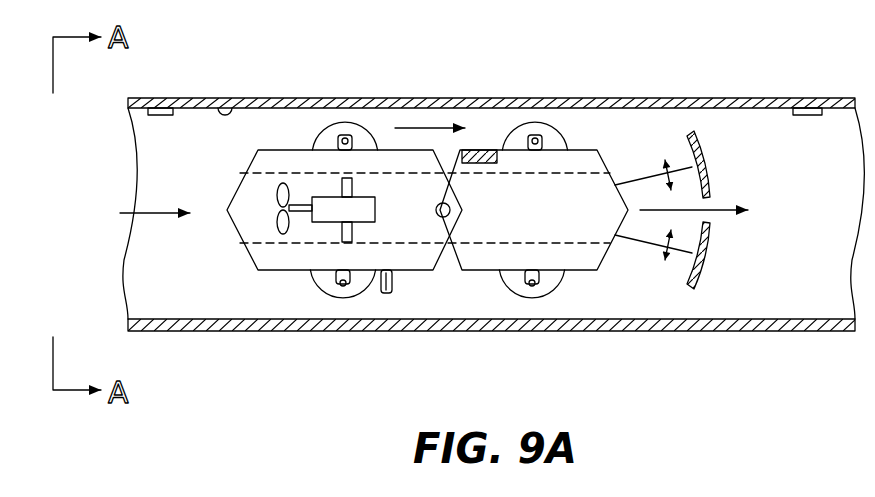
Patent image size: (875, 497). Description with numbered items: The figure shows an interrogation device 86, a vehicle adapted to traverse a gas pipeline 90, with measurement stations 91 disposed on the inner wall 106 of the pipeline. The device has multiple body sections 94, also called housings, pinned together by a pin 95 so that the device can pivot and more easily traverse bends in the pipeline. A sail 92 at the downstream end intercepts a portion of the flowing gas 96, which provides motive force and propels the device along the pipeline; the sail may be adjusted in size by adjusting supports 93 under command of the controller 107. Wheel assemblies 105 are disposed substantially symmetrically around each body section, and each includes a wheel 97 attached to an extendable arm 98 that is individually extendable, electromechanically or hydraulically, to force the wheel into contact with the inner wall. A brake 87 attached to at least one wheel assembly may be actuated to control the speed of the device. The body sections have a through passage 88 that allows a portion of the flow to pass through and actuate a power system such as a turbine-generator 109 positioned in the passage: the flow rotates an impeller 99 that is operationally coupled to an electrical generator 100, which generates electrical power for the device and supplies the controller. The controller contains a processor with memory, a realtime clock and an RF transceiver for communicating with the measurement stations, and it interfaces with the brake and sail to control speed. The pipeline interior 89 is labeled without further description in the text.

The interrogation device 86 is at (559, 342).
The brake 87 is at (393, 283).
The through passage 88 is at (311, 210).
The pipe interior 89 is at (194, 142).
The gas pipeline 90 is at (268, 97).
The measurement station 91 is at (162, 107).
The sail 92 is at (692, 133).
The support 93 is at (638, 172).
The body section 94 is at (388, 150).
The pin 95 is at (443, 203).
The flowing gas 96 is at (142, 214).
The wheel 97 is at (312, 302).
The extendable arm 98 is at (378, 302).
The impeller 99 is at (285, 228).
The electrical generator 100 is at (318, 215).
The wheel assembly 105 is at (342, 119).
The inner wall 106 is at (222, 108).
The controller 107 is at (480, 150).
The turbine-generator 109 is at (298, 240).